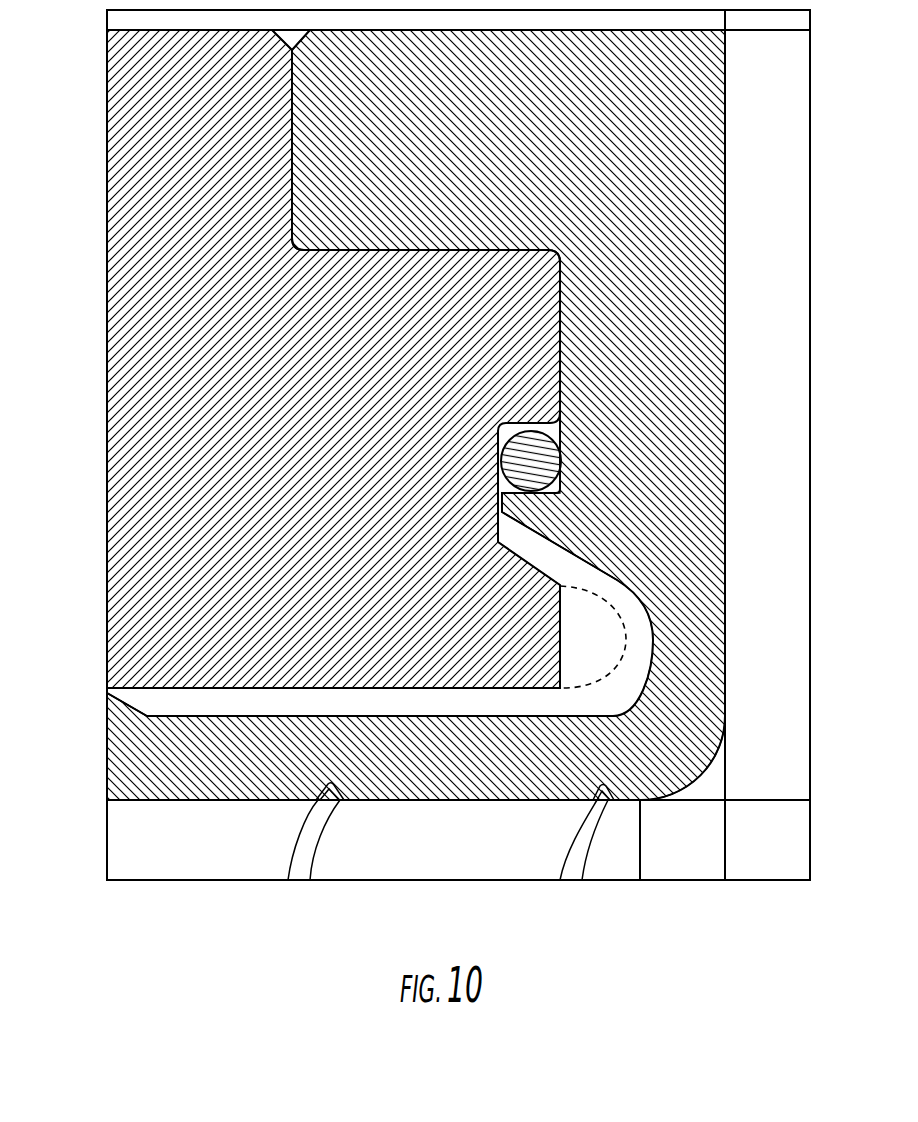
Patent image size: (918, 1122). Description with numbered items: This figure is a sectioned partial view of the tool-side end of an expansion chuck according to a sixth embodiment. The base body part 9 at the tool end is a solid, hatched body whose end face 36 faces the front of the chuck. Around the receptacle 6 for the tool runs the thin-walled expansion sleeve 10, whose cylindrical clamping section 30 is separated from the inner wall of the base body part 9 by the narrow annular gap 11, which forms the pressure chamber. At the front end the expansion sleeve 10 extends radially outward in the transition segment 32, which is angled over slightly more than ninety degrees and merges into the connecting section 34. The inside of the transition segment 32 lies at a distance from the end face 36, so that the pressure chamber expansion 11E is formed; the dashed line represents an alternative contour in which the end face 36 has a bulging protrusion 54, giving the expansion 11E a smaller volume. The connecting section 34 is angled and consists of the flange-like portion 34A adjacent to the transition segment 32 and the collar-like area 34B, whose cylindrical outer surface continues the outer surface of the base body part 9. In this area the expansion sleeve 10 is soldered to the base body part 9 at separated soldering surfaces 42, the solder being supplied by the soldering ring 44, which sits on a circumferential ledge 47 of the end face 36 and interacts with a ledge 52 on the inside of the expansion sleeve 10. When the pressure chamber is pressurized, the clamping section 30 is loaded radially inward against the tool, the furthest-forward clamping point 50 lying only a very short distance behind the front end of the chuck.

The receptacle 6 is at (265, 853).
The base body part at the tool end 9 is at (251, 413).
The expansion sleeve 10 is at (142, 763).
The annular gap 11 is at (393, 703).
The pressure chamber expansion 11E is at (640, 633).
The cylindrical clamping section 30 is at (435, 788).
The transition segment 32 is at (672, 770).
The connecting section 34 is at (703, 188).
The flange-like portion 34A is at (672, 360).
The collar-like area 34B is at (454, 158).
The end face 36 is at (562, 605).
The soldering surfaces 42 is at (289, 163).
The soldering ring 44 is at (507, 470).
The circumferential ledge 47 is at (527, 422).
The clamping point 50 is at (638, 801).
The ledge on the inside of the expansion sleeve 52 is at (560, 460).
The bulging protrusion 54 is at (622, 665).